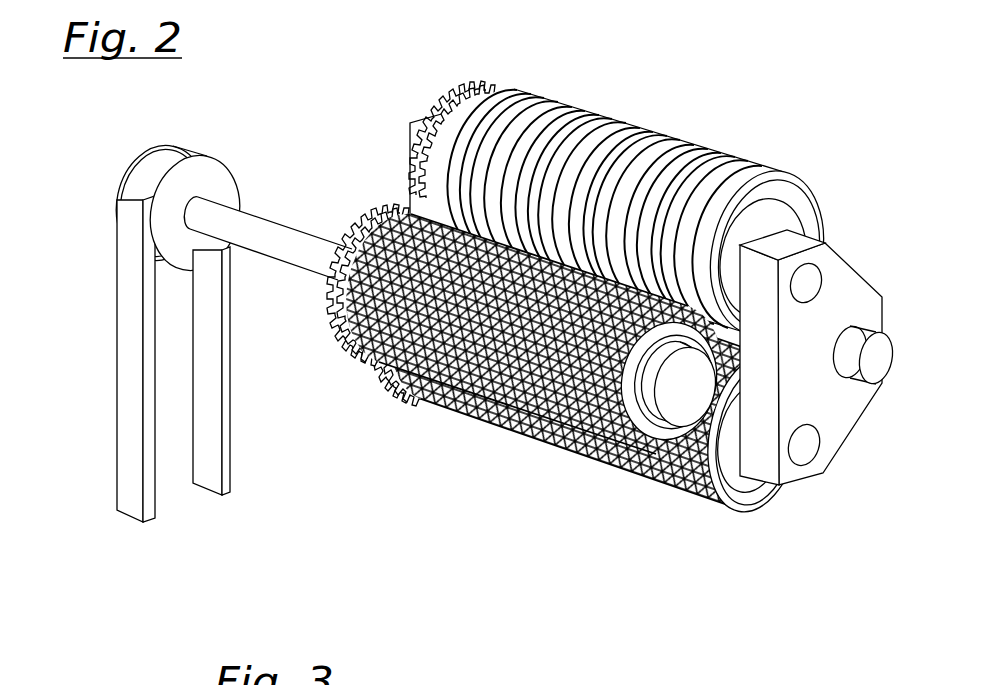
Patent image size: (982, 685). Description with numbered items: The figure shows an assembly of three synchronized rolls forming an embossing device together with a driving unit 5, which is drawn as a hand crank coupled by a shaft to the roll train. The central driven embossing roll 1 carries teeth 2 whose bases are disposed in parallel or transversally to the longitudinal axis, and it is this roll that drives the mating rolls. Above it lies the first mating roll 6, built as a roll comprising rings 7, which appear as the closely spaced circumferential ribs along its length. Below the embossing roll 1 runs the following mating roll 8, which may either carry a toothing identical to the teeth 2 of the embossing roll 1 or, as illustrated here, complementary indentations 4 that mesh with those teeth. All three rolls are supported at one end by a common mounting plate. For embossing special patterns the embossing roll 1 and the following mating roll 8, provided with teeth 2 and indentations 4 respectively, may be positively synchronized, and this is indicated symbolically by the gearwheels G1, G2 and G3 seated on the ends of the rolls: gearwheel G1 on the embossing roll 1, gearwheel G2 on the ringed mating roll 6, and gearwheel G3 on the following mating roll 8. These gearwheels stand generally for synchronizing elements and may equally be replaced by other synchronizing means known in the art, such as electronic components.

The driven embossing roll 1 is at (501, 317).
The teeth 2 is at (395, 360).
The complementary indentations 4 is at (683, 497).
The driving unit 5 is at (268, 142).
The mating roll 6 is at (648, 179).
The rings 7 is at (728, 163).
The following mating roll 8 is at (603, 441).
The gearwheel G1 is at (367, 220).
The gearwheel G2 is at (470, 92).
The gearwheel G3 is at (432, 407).